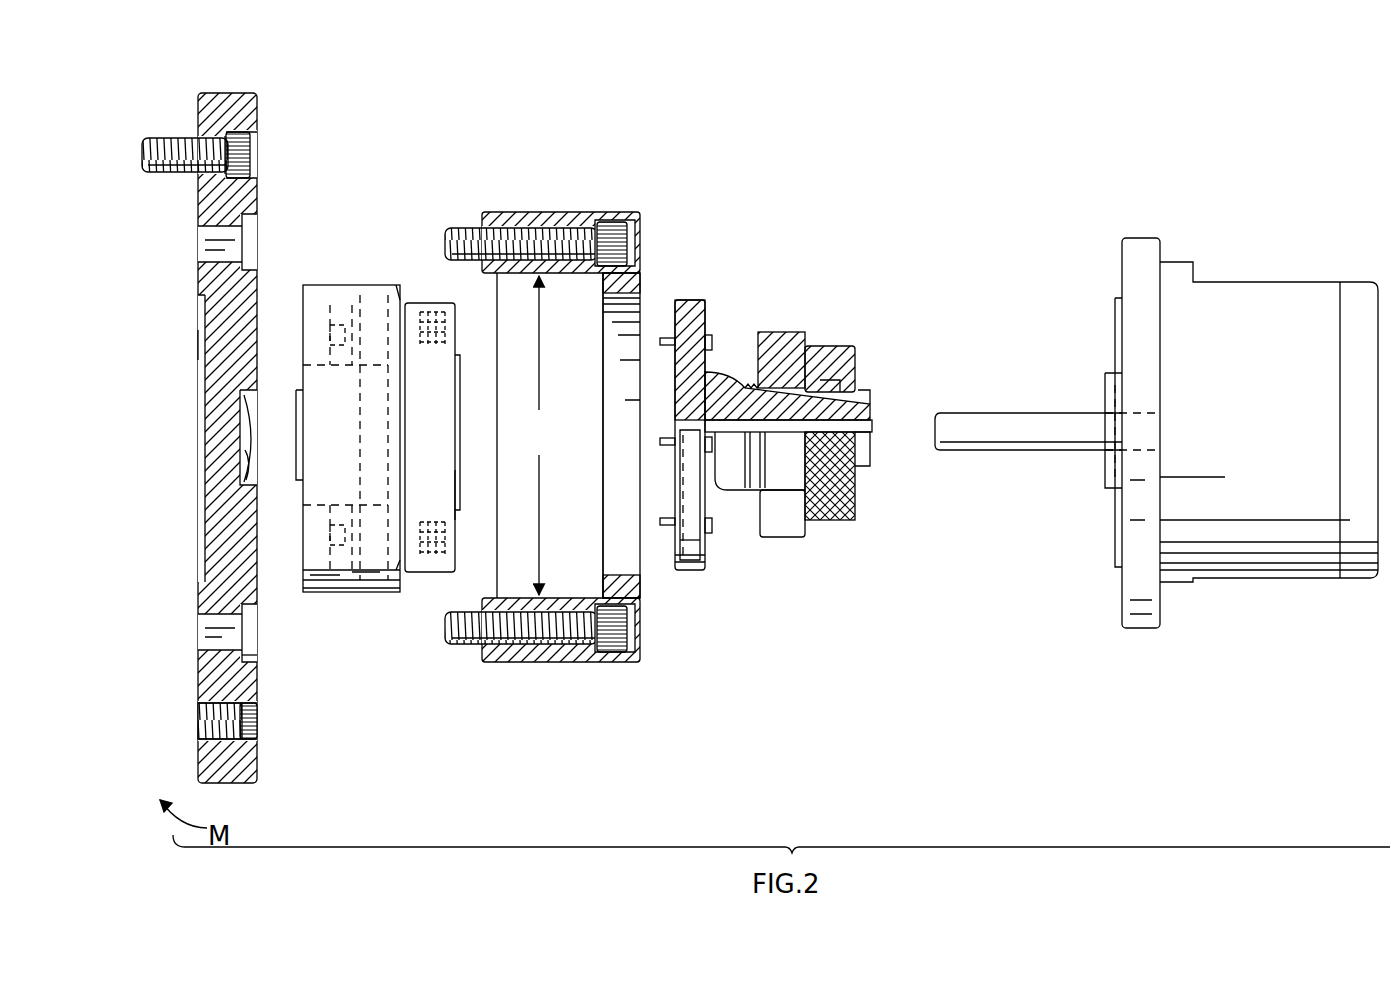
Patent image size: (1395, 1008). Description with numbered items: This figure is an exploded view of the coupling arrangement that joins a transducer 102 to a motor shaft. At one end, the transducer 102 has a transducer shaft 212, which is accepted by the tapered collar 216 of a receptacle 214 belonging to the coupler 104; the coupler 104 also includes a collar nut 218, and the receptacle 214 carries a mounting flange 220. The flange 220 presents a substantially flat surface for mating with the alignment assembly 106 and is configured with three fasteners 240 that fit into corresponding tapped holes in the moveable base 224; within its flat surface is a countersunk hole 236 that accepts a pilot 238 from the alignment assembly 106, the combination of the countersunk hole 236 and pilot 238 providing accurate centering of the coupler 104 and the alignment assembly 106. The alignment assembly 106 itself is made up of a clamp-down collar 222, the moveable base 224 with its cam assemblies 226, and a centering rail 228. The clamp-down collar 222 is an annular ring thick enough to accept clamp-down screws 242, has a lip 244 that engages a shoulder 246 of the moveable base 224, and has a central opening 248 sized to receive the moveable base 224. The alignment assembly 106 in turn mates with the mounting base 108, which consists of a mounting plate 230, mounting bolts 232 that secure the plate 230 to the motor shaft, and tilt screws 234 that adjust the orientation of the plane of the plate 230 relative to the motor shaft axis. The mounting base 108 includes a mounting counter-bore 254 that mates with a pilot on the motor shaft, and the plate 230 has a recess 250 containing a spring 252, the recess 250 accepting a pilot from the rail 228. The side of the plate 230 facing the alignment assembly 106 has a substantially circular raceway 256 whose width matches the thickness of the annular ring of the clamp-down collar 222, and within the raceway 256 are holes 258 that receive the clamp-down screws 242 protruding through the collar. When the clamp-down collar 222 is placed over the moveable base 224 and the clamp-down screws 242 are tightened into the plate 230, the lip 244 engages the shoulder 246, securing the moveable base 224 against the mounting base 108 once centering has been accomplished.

The transducer 102 is at (1234, 284).
The coupler 104 is at (805, 245).
The alignment assembly 106 is at (508, 197).
The mounting base 108 is at (258, 84).
The transducer shaft 212 is at (1026, 450).
The receptacle 214 is at (705, 492).
The tapered collar 216 is at (818, 388).
The collar nut 218 is at (790, 538).
The mounting flange 220 is at (688, 572).
The clamp-down collar 222 is at (590, 210).
The moveable base 224 is at (318, 283).
The cam assemblies 226 is at (448, 330).
The centering rail 228 is at (322, 590).
The mounting plate 230 is at (258, 760).
The mounting bolts 232 is at (256, 156).
The tilt screws 234 is at (258, 722).
The countersunk hole 236 is at (712, 378).
The pilot 238 is at (458, 535).
The fasteners 240 is at (666, 305).
The clamp-down screws 242 is at (632, 240).
The lip 244 is at (603, 276).
The shoulder 246 is at (410, 305).
The central opening 248 is at (545, 435).
The recess 250 is at (250, 468).
The spring 252 is at (245, 397).
The mounting counter-bore 254 is at (198, 341).
The raceway 256 is at (255, 660).
The holes 258 is at (240, 635).